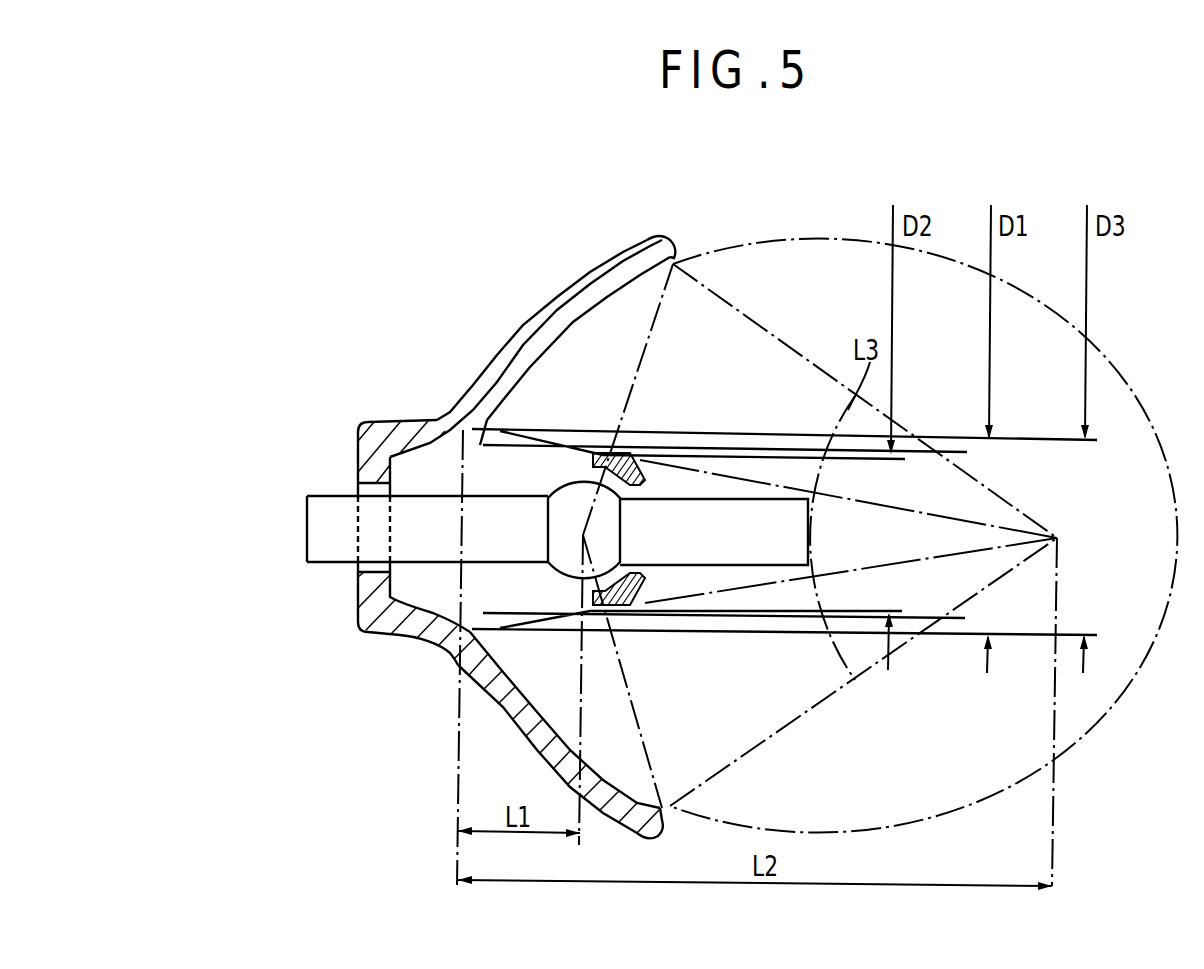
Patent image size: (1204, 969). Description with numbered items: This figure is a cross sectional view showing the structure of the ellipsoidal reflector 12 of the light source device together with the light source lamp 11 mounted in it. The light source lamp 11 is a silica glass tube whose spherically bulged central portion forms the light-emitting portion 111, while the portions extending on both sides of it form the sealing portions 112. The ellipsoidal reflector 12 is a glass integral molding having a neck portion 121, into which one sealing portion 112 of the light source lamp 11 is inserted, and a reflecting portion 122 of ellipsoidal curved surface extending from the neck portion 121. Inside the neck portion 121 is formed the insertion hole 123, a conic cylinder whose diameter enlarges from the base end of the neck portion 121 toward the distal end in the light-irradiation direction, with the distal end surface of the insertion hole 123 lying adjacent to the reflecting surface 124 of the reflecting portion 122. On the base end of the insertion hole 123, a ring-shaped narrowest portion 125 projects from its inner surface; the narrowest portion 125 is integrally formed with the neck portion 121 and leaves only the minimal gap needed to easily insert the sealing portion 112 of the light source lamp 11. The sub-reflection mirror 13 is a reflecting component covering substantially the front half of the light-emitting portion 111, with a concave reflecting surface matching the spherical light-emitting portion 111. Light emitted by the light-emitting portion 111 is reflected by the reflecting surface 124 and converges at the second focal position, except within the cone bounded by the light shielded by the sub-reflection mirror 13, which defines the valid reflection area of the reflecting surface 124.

The light source lamp 11 is at (700, 566).
The light-emitting portion 111 is at (568, 482).
The sealing portion 112 is at (308, 528).
The ellipsoidal reflector 12 is at (662, 230).
The neck portion 121 is at (417, 421).
The reflecting portion 122 is at (577, 278).
The insertion hole 123 is at (437, 451).
The reflecting surface 124 is at (638, 292).
The narrowest portion 125 is at (359, 458).
The sub-reflection mirror 13 is at (638, 455).